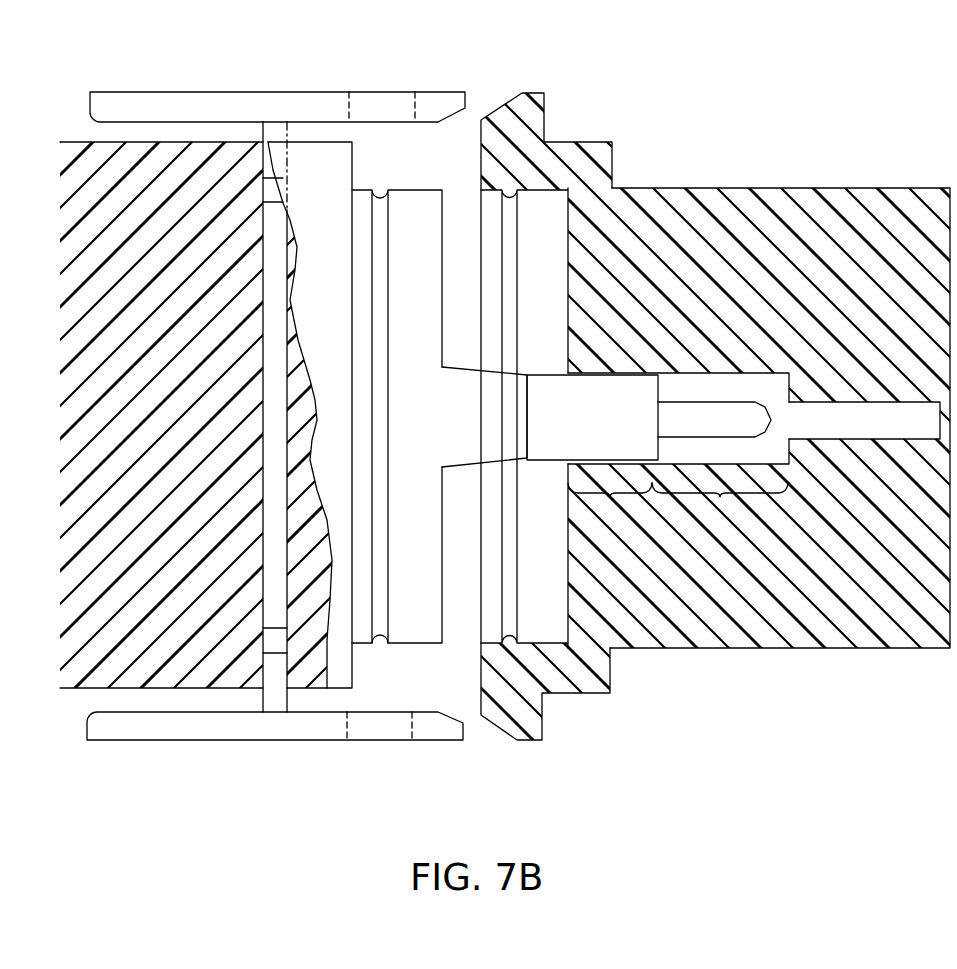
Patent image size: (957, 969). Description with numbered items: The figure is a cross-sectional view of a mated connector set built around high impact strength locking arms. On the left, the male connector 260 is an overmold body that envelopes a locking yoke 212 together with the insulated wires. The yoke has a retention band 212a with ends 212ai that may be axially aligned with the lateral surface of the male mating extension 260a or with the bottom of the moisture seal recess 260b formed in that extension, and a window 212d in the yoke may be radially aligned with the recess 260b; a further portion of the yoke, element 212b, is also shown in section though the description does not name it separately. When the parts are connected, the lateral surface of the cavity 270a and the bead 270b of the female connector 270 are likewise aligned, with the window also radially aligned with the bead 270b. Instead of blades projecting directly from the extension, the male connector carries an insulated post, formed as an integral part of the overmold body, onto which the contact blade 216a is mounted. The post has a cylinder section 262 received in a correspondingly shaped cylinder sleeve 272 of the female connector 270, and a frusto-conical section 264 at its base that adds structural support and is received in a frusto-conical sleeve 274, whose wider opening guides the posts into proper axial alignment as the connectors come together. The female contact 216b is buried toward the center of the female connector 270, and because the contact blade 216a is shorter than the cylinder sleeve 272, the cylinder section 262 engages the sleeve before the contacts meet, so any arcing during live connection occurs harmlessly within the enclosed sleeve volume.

The locking yoke 212 is at (309, 100).
The retention band 212a is at (270, 568).
The ends 212ai is at (263, 190).
The pin 212b is at (277, 132).
The window 212d is at (388, 100).
The male connector 260 is at (167, 242).
The male mating extension 260a is at (415, 200).
The moisture seal recess 260b is at (380, 635).
The cylinder section 262 is at (607, 432).
The frusto-conical section 264 is at (500, 410).
The contact blade 216a is at (740, 435).
The female contact 216b is at (842, 425).
The female connector 270 is at (857, 247).
The cavity 270a is at (568, 256).
The bead 270b is at (520, 213).
The cylinder sleeve 272 is at (720, 497).
The frusto-conical sleeve 274 is at (614, 495).